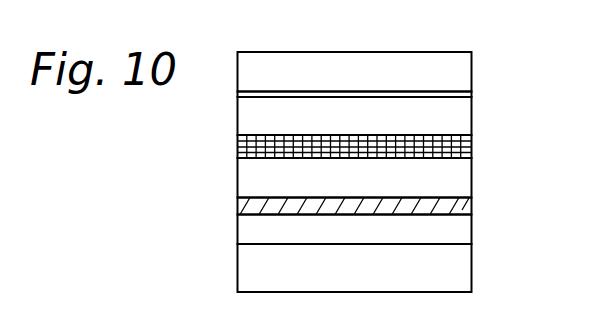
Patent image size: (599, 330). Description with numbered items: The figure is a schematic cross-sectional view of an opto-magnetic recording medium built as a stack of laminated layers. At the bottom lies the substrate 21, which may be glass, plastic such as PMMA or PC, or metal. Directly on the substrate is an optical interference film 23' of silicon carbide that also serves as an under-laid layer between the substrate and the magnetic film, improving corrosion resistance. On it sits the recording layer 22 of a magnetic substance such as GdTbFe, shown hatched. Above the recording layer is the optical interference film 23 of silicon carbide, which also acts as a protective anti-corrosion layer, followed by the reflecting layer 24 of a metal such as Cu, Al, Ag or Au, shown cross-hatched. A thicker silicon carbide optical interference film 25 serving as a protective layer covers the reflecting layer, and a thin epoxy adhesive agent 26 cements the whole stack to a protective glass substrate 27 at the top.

The protective glass substrate 27 is at (462, 63).
The epoxy adhesive agent 26 is at (463, 92).
The optical interference film serving also as a protective layer 25 is at (462, 117).
The reflecting layer 24 is at (465, 145).
The optical interference film serving also as a protective anti-corrosion layer 23 is at (386, 178).
The recording layer 22 is at (465, 205).
The optical interference film serving also as an under-laid layer 23' is at (389, 234).
The substrate 21 is at (462, 273).